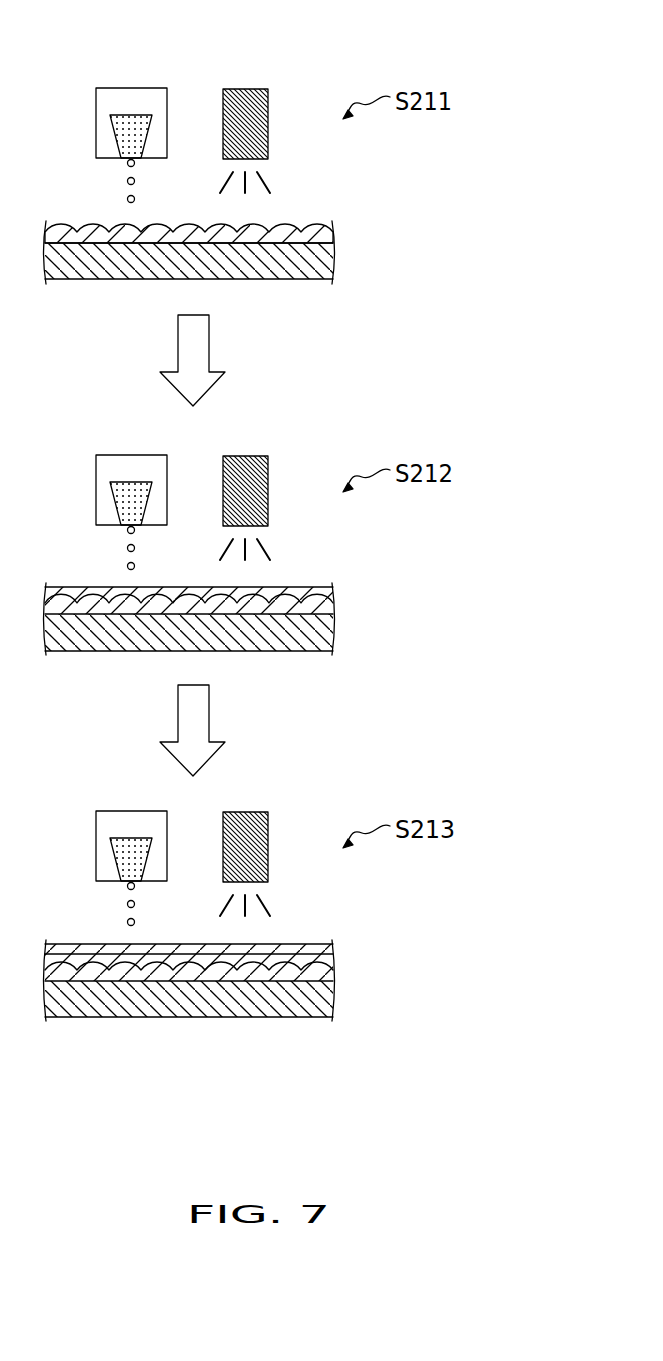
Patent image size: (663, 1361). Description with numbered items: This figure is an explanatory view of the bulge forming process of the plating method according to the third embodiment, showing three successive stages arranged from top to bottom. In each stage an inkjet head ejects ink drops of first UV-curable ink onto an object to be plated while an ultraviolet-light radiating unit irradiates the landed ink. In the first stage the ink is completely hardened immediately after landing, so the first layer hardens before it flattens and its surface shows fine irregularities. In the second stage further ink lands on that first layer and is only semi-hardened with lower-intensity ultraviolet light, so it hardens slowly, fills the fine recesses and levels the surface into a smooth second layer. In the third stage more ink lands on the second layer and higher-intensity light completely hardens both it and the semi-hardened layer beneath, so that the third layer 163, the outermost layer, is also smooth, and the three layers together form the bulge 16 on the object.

The bulge 16 is at (448, 915).
The third layer 163 is at (330, 948).